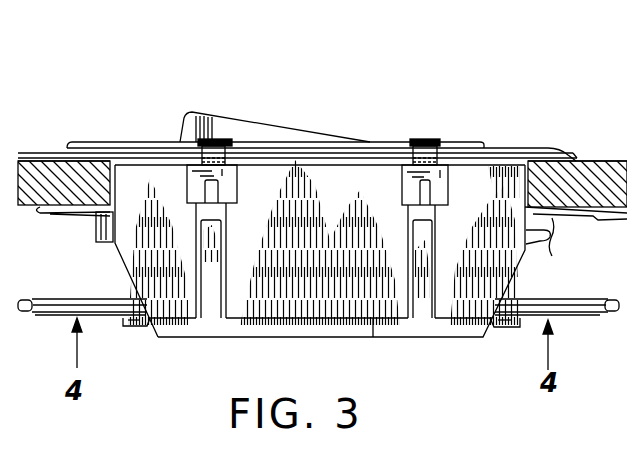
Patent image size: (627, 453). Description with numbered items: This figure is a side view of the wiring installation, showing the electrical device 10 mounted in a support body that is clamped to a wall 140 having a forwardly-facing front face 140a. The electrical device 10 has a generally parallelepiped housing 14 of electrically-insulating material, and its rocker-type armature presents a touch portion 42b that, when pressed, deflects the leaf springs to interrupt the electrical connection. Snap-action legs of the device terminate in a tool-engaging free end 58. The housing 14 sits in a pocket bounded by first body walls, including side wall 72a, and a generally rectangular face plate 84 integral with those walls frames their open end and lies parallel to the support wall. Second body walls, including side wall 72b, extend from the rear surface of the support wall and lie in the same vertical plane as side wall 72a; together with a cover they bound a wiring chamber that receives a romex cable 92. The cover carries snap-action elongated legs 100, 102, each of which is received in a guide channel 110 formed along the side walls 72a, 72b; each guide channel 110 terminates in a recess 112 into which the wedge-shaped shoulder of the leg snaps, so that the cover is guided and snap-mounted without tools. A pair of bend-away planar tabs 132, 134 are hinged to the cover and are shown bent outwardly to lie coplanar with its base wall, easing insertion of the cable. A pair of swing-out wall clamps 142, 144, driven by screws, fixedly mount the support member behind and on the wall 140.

The electrical device 10 is at (186, 102).
The housing 14 is at (160, 130).
The tool-engaging free end 58 is at (213, 138).
The touch portion 42b is at (240, 121).
The side wall 72a is at (372, 153).
The side wall 72b is at (305, 271).
The face plate 84 is at (553, 148).
The wall 140 is at (625, 110).
The front face 140a is at (597, 162).
The wall clamp 142 is at (94, 230).
The wall clamp 144 is at (559, 251).
The romex cable 92 is at (60, 299).
The recess 112 is at (223, 212).
The guide channel 110 is at (227, 281).
The snap-action elongated leg 100 is at (205, 303).
The snap-action elongated leg 102 is at (427, 308).
The bend-away planar tab 132 is at (137, 323).
The bend-away planar tab 134 is at (503, 330).